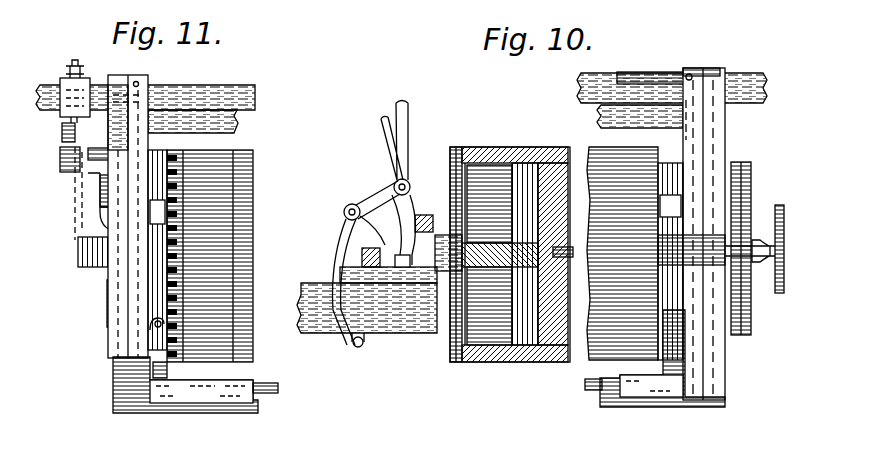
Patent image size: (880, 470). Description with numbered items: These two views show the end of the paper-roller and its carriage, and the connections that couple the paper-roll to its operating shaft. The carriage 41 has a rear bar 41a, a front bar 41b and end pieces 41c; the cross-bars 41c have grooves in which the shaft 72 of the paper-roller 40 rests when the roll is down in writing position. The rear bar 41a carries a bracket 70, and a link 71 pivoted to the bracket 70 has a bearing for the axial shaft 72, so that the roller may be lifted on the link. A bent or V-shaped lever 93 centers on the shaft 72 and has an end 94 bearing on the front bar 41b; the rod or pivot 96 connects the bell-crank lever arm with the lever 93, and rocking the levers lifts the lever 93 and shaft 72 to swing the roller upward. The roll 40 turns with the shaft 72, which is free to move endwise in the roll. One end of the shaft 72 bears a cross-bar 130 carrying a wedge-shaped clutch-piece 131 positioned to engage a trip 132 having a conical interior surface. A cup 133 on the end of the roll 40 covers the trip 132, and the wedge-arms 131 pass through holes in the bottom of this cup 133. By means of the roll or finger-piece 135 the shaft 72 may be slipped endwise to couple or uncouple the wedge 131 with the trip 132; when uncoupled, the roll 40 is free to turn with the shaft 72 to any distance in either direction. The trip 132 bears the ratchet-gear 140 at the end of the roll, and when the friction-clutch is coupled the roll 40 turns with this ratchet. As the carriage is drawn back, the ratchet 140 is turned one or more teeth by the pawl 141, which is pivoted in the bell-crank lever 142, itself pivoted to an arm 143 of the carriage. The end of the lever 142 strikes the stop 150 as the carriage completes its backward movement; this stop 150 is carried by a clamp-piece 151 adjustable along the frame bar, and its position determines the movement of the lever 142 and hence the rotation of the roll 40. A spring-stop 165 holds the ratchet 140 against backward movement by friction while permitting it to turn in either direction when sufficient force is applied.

In FIG. 11, the paper-roller 40 is at (253, 240).
In FIG. 10, the paper-roller 40 is at (622, 253).
In FIG. 10, the carriage 41 is at (609, 118).
In FIG. 11, the rear bar 41a is at (210, 122).
In FIG. 11, the front bar 41b is at (202, 389).
In FIG. 10, the front bar 41b is at (662, 366).
In FIG. 11, the end piece 41c is at (118, 80).
In FIG. 10, the end piece 41c is at (720, 132).
In FIG. 10, the bracket 70 is at (688, 72).
In FIG. 10, the link 71 is at (686, 141).
In FIG. 10, the shaft 72 is at (762, 257).
In FIG. 11, the V-shaped lever 93 is at (157, 250).
In FIG. 10, the V-shaped lever 93 is at (670, 261).
In FIG. 11, the end of lever 94 is at (201, 391).
In FIG. 10, the end of lever 94 is at (633, 383).
In FIG. 11, the rod 96 is at (283, 389).
In FIG. 10, the rod 96 is at (585, 385).
In FIG. 10, the cross-bar 130 is at (560, 280).
In FIG. 10, the wedge-shaped clutch-piece 131 is at (520, 160).
In FIG. 10, the trip 132 is at (480, 147).
In FIG. 11, the cup 133 is at (173, 240).
In FIG. 10, the cup 133 is at (512, 362).
In FIG. 10, the finger-piece 135 is at (794, 249).
In FIG. 11, the ratchet-gear 140 is at (135, 157).
In FIG. 10, the ratchet-gear 140 is at (451, 154).
In FIG. 10, the pawl 141 is at (387, 138).
In FIG. 11, the bell-crank lever 142 is at (62, 138).
In FIG. 10, the bell-crank lever 142 is at (332, 280).
In FIG. 10, the arm 143 is at (352, 209).
In FIG. 11, the stop 150 is at (70, 122).
In FIG. 10, the stop 150 is at (361, 347).
In FIG. 11, the clamp-piece 151 is at (70, 75).
In FIG. 11, the spring-stop 165 is at (165, 376).